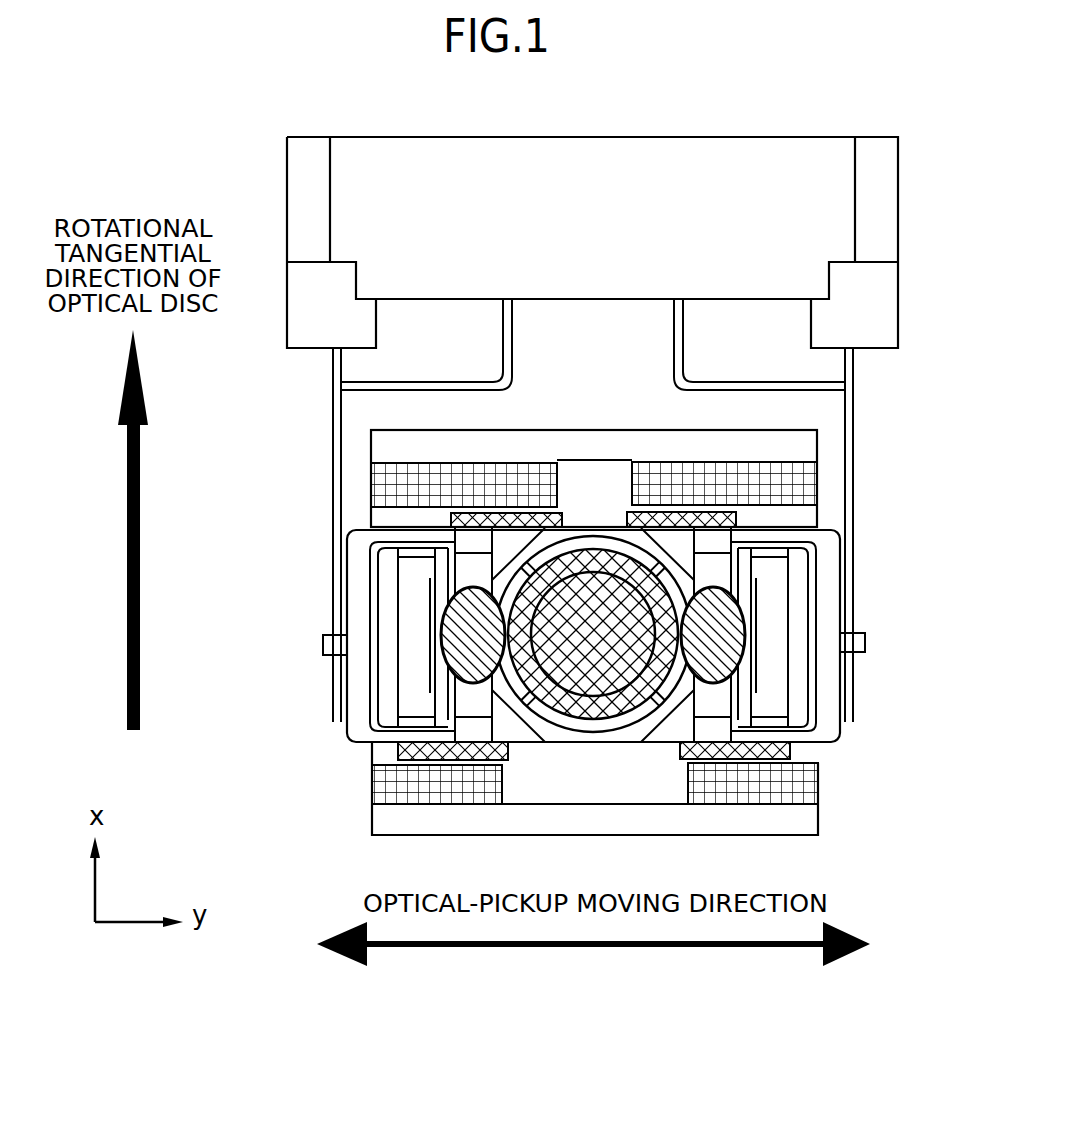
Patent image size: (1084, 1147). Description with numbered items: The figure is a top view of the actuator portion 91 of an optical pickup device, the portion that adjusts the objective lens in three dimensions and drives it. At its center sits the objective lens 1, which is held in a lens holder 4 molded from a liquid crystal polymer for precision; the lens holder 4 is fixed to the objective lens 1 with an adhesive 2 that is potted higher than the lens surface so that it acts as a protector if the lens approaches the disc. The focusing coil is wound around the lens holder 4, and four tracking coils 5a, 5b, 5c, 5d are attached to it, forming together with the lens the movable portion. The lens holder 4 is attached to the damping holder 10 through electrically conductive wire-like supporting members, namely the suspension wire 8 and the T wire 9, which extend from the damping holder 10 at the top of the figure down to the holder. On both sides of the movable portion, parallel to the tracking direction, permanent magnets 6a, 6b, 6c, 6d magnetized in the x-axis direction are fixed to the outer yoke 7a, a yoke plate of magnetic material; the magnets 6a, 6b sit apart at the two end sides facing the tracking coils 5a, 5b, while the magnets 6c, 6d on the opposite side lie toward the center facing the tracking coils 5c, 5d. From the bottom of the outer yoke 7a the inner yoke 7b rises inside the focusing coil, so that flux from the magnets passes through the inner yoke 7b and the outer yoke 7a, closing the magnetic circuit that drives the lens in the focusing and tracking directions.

The actuator portion 91 is at (797, 115).
The damping holder 10 is at (875, 210).
The T wire 9 is at (377, 392).
The suspension wire 8 is at (858, 446).
The outer yoke 7a is at (385, 447).
The inner yoke 7b is at (410, 583).
The permanent magnet 6a is at (373, 785).
The permanent magnet 6b is at (810, 783).
The permanent magnet 6c is at (803, 473).
The permanent magnet 6d is at (372, 475).
The tracking coil 5a is at (400, 750).
The tracking coil 5b is at (787, 748).
The tracking coil 5c is at (733, 517).
The tracking coil 5d is at (450, 518).
The lens holder 4 is at (718, 705).
The objective lens 1 is at (633, 580).
The adhesive 2 is at (733, 617).